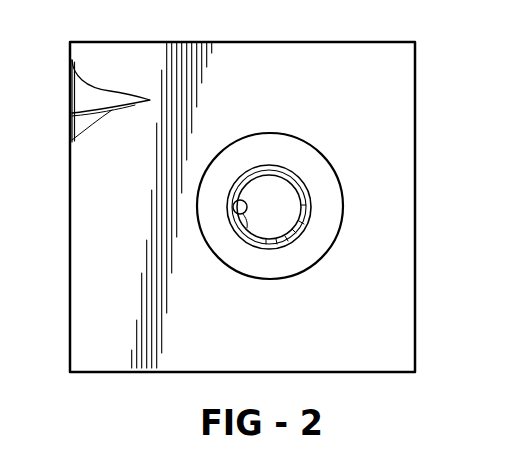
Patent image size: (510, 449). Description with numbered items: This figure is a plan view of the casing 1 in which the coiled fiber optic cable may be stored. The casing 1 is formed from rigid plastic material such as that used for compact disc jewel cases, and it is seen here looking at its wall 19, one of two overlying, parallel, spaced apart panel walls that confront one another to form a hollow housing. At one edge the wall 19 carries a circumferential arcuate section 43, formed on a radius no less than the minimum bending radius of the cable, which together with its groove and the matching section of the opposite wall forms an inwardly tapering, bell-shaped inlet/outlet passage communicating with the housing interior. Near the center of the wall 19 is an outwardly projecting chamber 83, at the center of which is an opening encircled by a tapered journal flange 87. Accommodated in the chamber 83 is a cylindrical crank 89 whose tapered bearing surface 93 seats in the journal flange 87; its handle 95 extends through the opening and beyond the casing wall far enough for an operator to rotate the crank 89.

The casing 1 is at (262, 205).
The wall 19 is at (312, 332).
The arcuate section 43 is at (105, 112).
The chamber 83 is at (325, 230).
The journal flange 87 is at (306, 207).
The crank 89 is at (335, 192).
The bearing surface 93 is at (266, 175).
The handle 95 is at (247, 232).